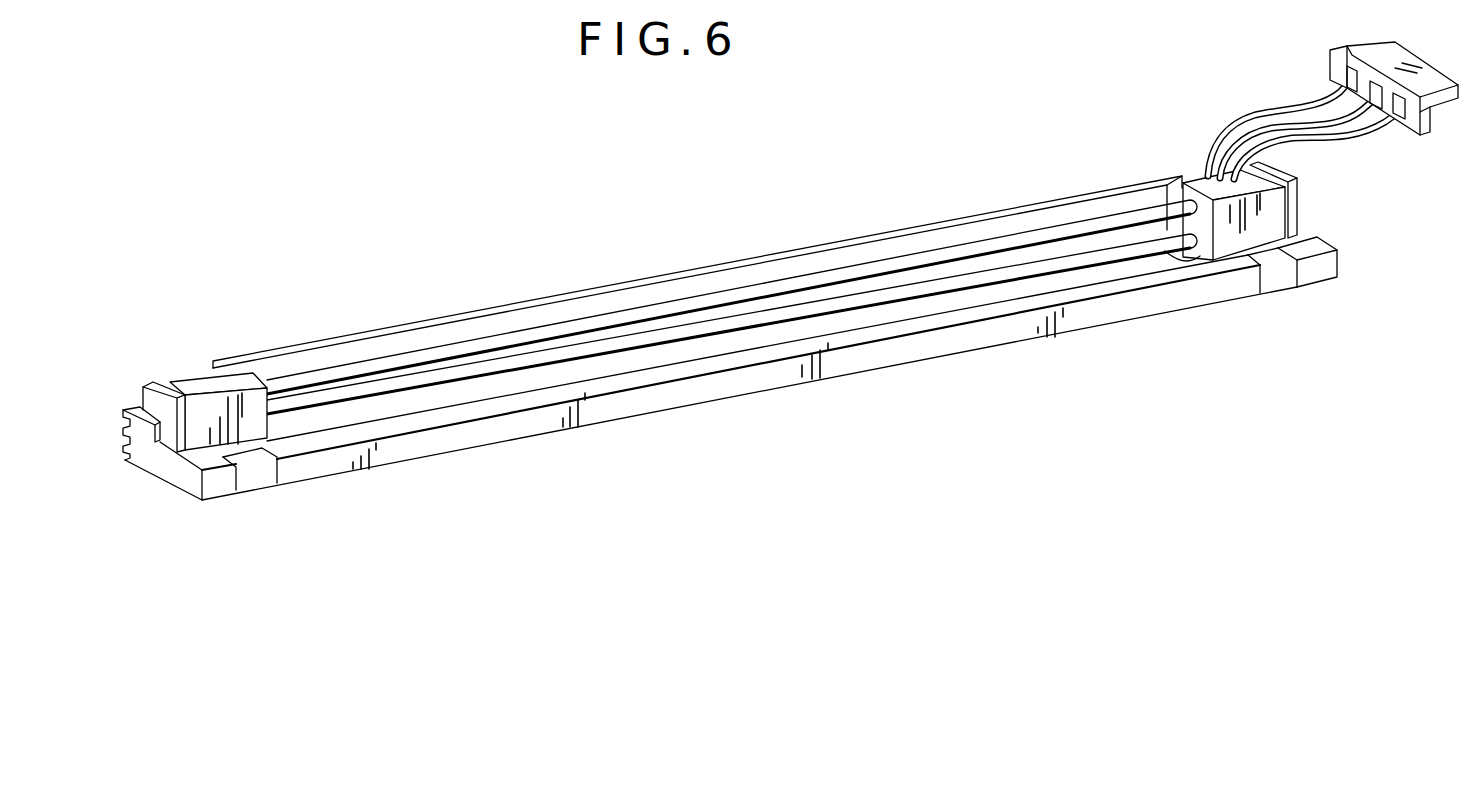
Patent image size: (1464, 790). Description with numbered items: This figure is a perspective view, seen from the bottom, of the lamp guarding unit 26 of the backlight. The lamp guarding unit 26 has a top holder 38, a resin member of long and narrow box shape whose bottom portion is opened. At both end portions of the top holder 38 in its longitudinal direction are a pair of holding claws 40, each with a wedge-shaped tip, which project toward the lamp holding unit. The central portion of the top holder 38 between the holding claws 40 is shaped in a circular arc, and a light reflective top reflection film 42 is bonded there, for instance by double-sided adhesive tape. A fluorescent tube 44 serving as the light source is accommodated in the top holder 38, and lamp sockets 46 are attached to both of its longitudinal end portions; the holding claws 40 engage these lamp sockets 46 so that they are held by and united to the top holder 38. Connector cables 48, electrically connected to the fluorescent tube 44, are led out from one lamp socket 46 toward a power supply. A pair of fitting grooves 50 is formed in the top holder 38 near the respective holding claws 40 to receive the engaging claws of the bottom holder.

The lamp guarding unit 26 is at (392, 289).
The top holder 38 is at (540, 427).
The holding claws 40 is at (159, 382).
The top reflection film 42 is at (1048, 218).
The fluorescent tube 44 is at (887, 267).
The lamp sockets 46 is at (198, 380).
The connector cables 48 is at (1290, 108).
The fitting grooves 50 is at (243, 477).